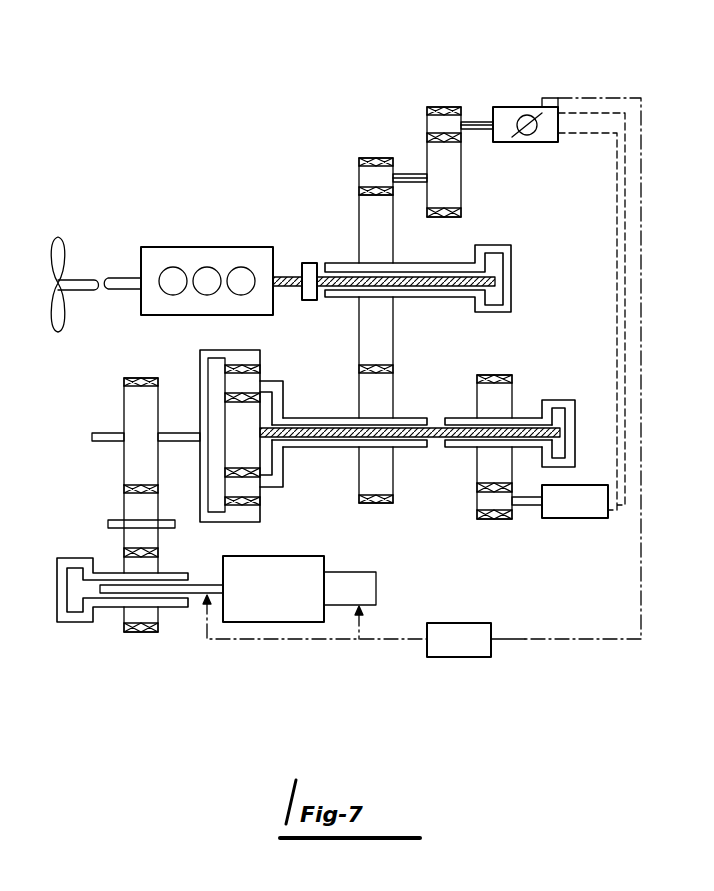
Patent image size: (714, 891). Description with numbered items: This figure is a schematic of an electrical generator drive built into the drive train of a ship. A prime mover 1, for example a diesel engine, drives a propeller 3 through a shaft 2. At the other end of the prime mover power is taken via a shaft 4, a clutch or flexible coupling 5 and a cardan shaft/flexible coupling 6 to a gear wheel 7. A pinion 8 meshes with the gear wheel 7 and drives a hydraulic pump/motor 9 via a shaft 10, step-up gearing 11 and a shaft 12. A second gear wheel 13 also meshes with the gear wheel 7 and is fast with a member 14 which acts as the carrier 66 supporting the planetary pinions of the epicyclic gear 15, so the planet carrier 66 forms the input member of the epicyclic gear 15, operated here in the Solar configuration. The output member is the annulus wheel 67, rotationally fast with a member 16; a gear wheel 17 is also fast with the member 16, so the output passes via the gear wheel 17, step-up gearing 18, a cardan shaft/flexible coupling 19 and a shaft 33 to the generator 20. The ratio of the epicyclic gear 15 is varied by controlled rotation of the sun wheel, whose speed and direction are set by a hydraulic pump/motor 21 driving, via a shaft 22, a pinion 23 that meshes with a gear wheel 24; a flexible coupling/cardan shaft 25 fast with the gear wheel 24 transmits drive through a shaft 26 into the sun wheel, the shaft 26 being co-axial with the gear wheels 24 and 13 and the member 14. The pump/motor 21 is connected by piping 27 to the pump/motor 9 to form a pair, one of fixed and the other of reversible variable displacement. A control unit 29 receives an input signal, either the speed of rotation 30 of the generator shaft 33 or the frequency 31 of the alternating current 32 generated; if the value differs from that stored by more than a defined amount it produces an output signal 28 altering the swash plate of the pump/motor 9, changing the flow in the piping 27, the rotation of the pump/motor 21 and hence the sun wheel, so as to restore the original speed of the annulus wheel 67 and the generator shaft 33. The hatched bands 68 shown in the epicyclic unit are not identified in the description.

The prime mover 1 is at (186, 248).
The shaft 2 is at (120, 277).
The propeller 3 is at (58, 240).
The shaft 4 is at (283, 276).
The clutch or flexible coupling 5 is at (309, 263).
The cardan shaft/flexible coupling 6 is at (480, 312).
The gear wheel 7 is at (360, 225).
The pinion 8 is at (378, 165).
The hydraulic pump/motor 9 is at (507, 112).
The shaft 10 is at (420, 183).
The step-up gearing 11 is at (428, 112).
The shaft 12 is at (476, 122).
The second gear wheel 13 is at (393, 505).
The member 14 is at (397, 488).
The epicyclic gear 15 is at (203, 426).
The member 16 is at (213, 512).
The gear wheel 17 is at (133, 455).
The step-up gearing 18 is at (143, 567).
The cardan shaft/flexible coupling 19 is at (103, 600).
The generator 20 is at (272, 622).
The hydraulic pump/motor 21 is at (590, 518).
The shaft 22 is at (525, 505).
The pinion 23 is at (487, 505).
The gear wheel 24 is at (485, 468).
The flexible coupling/cardan shaft 25 is at (560, 455).
The shaft 26 is at (330, 422).
The piping 27 is at (560, 133).
The output signal 28 is at (545, 98).
The control unit 29 is at (470, 657).
The speed of rotation 30 is at (215, 650).
The frequency 31 is at (352, 645).
The alternating current 32 is at (373, 606).
The generator shaft 33 is at (190, 596).
The planet carrier 66 is at (270, 420).
The annulus wheel 67 is at (240, 353).
The gear 68 is at (245, 385).